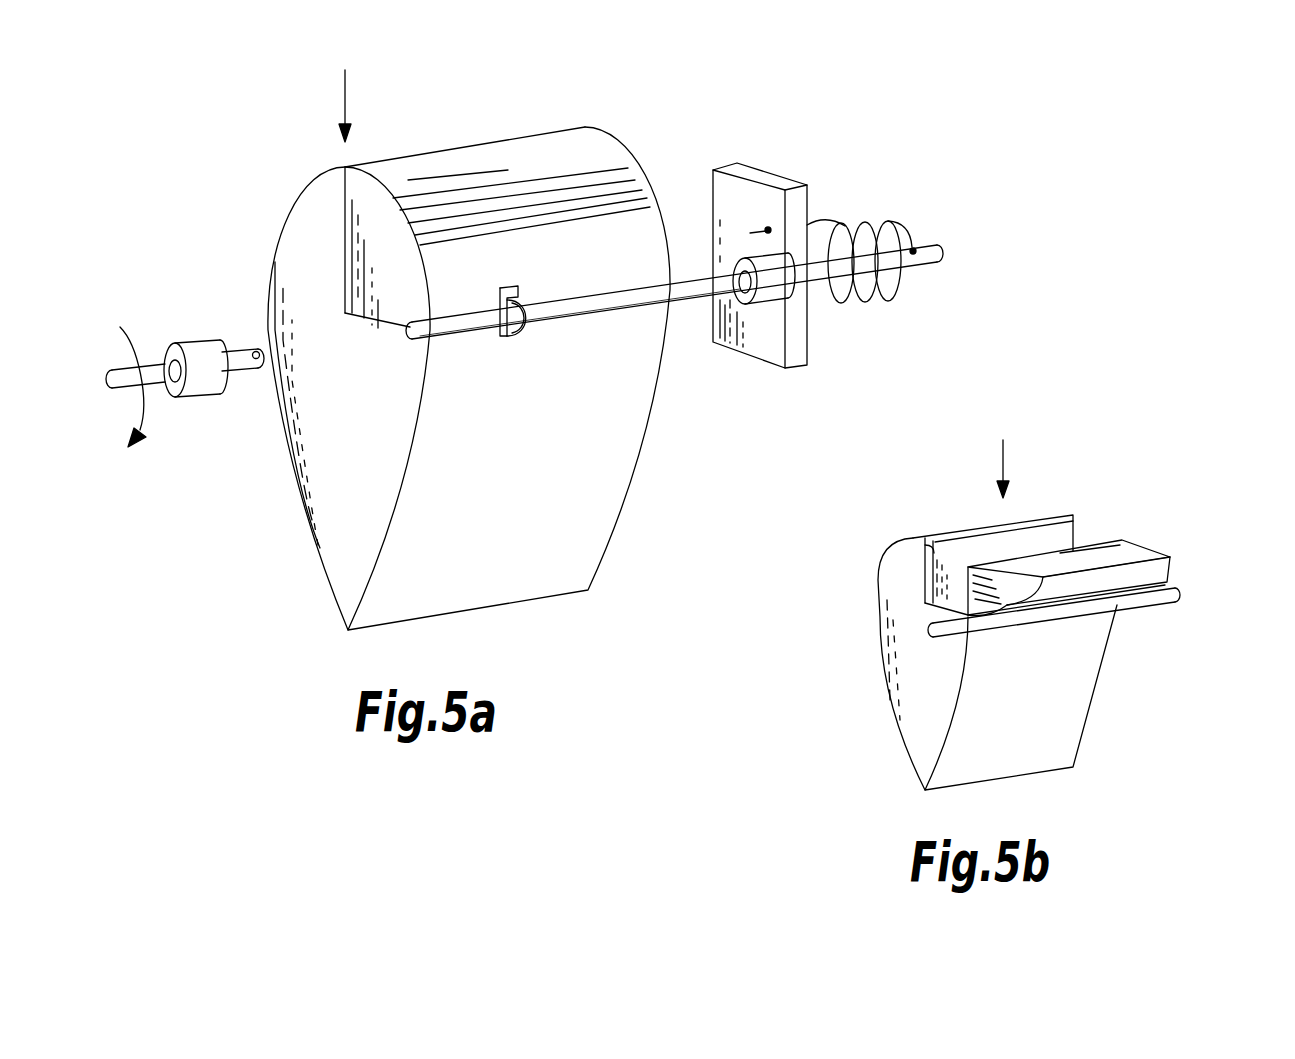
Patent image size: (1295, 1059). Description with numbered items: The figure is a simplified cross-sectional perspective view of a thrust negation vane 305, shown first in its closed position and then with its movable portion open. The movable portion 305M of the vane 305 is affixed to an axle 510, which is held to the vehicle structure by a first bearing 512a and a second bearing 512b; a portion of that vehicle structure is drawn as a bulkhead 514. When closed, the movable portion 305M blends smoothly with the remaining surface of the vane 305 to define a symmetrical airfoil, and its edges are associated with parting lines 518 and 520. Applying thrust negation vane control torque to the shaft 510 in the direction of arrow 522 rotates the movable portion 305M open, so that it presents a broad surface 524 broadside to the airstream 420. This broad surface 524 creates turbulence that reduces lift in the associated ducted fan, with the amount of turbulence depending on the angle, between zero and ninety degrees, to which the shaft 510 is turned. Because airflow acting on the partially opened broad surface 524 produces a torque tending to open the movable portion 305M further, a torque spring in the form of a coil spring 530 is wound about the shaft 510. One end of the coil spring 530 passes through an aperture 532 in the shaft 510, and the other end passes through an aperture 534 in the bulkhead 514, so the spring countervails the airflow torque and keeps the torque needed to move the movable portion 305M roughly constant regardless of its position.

In FIG. 5A, the vane 305 is at (320, 550).
In FIG. 5B, the vane 305 is at (1088, 722).
In FIG. 5A, the movable portion 305M is at (515, 142).
In FIG. 5B, the movable portion 305M is at (1175, 567).
In FIG. 5A, the airstream 420 is at (347, 88).
In FIG. 5B, the airstream 420 is at (1004, 455).
In FIG. 5A, the axle 510 is at (696, 306).
In FIG. 5B, the axle 510 is at (1160, 601).
In FIG. 5A, the first bearing 512a is at (193, 342).
In FIG. 5A, the second bearing 512b is at (776, 305).
In FIG. 5A, the bulkhead 514 is at (722, 168).
In FIG. 5A, the parting line 518 is at (345, 186).
In FIG. 5B, the parting line 518 is at (931, 540).
In FIG. 5A, the parting line 520 is at (375, 323).
In FIG. 5B, the parting line 520 is at (925, 605).
In FIG. 5A, the arrow 522 is at (146, 422).
In FIG. 5B, the broad surface 524 is at (1150, 545).
In FIG. 5A, the coil spring 530 is at (900, 222).
In FIG. 5A, the aperture 532 is at (914, 249).
In FIG. 5A, the aperture 534 is at (768, 227).